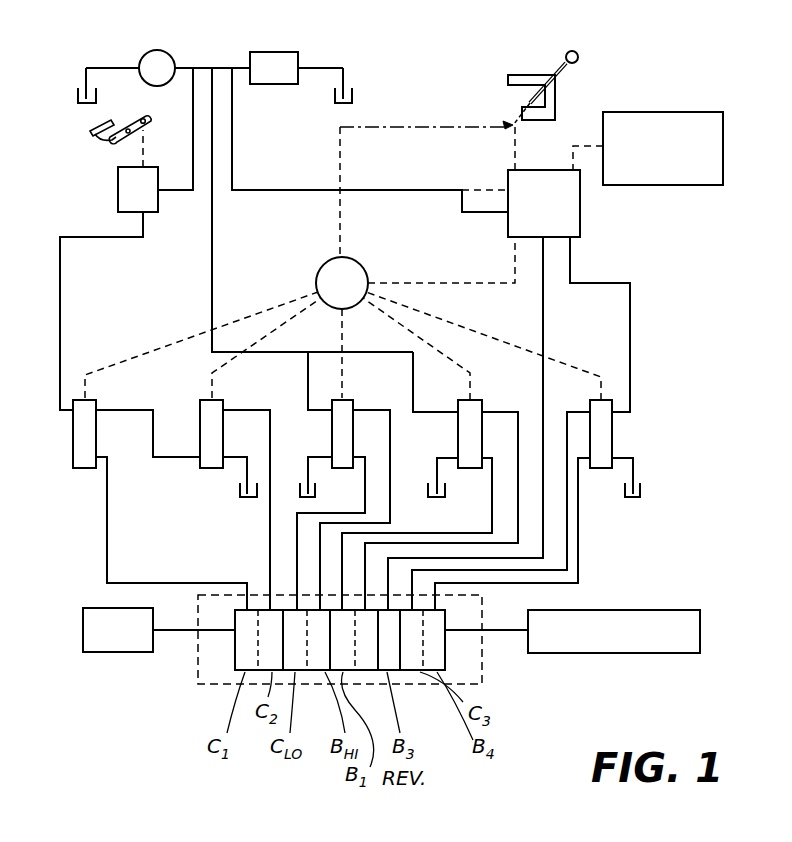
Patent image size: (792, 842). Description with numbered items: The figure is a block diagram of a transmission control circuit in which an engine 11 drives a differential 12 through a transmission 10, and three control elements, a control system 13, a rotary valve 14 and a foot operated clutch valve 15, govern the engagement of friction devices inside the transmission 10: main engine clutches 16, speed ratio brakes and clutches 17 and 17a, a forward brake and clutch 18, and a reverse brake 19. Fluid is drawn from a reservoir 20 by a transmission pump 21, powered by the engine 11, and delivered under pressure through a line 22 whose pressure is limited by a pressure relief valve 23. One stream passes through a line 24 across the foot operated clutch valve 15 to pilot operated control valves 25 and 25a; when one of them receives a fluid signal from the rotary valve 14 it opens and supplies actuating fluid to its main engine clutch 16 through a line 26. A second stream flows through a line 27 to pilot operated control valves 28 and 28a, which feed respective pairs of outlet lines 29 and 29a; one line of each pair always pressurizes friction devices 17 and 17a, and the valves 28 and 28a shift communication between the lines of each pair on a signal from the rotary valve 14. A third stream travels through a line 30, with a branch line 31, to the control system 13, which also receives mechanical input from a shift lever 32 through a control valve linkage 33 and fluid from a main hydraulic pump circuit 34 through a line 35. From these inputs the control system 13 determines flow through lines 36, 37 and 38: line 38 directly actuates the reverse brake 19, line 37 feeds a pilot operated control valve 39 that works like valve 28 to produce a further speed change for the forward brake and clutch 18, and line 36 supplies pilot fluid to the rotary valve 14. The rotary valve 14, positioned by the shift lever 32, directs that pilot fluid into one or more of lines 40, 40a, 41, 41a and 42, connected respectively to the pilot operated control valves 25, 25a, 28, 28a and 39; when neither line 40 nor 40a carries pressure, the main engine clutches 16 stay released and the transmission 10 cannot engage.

The transmission 10 is at (197, 663).
The engine 11 is at (95, 652).
The differential 12 is at (637, 653).
The control system 13 is at (580, 210).
The rotary valve 14 is at (319, 269).
The foot operated clutch valve 15 is at (118, 199).
The main engine clutches 16 is at (235, 658).
The speed ratio brake and clutch 17 is at (316, 670).
The speed ratio brake and clutch 17a is at (363, 671).
The forward brake and clutch 18 is at (438, 652).
The reverse brake 19 is at (393, 671).
The reservoir 20 is at (78, 94).
The transmission pump 21 is at (147, 53).
The line 22 is at (203, 67).
The pressure relief valve 23 is at (287, 52).
The line 24 is at (193, 137).
The pilot operated control valve 25 is at (80, 470).
The pilot operated control valve 25a is at (212, 470).
The line 26 is at (270, 551).
The line 27 is at (212, 240).
The pilot operated control valve 28 is at (332, 431).
The pilot operated control valve 28a is at (458, 433).
The outlet lines 29 is at (366, 500).
The outlet lines 29a is at (518, 508).
The line 30 is at (232, 137).
The branch line 31 is at (475, 190).
The shift lever 32 is at (561, 71).
The control valve linkage 33 is at (517, 147).
The main hydraulic pump circuit 34 is at (708, 112).
The line 35 is at (598, 144).
The line 36 is at (455, 282).
The line 37 is at (620, 283).
The line 38 is at (545, 315).
The pilot operated control valve 39 is at (612, 433).
The line 40 is at (166, 345).
The line 40a is at (212, 373).
The line 41 is at (345, 377).
The line 41a is at (473, 375).
The line 42 is at (470, 330).